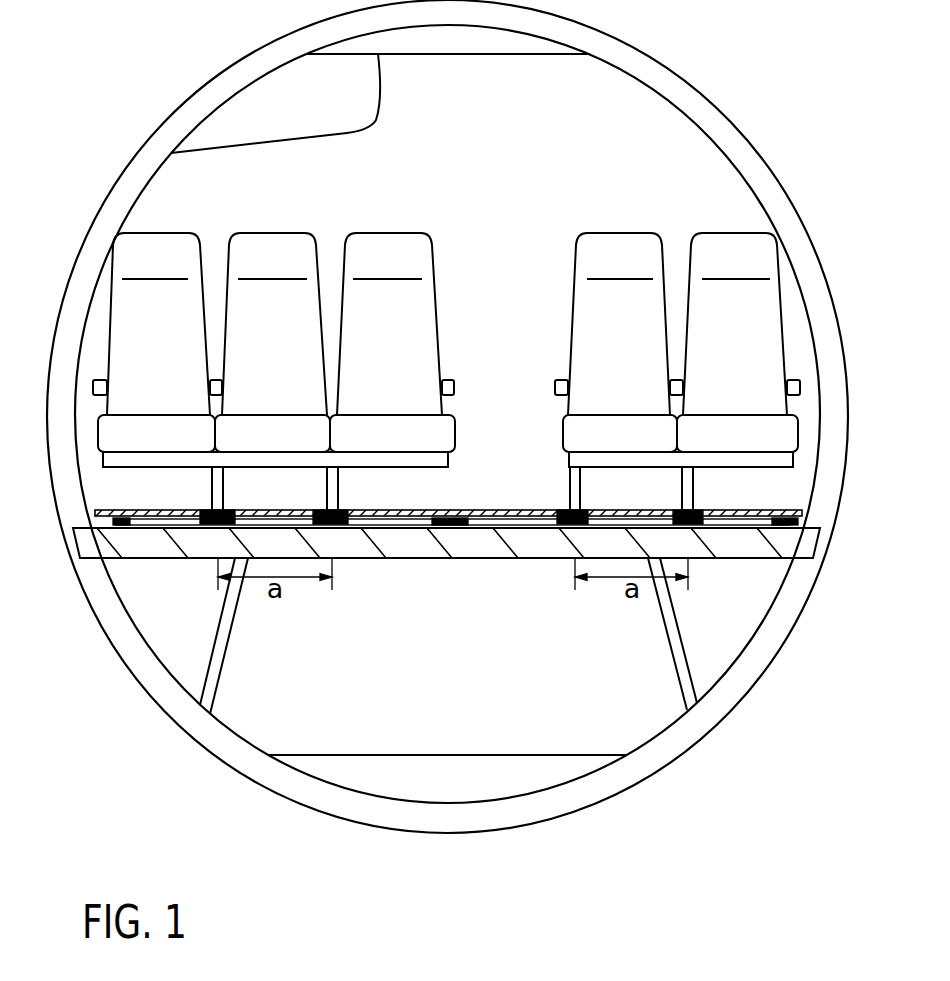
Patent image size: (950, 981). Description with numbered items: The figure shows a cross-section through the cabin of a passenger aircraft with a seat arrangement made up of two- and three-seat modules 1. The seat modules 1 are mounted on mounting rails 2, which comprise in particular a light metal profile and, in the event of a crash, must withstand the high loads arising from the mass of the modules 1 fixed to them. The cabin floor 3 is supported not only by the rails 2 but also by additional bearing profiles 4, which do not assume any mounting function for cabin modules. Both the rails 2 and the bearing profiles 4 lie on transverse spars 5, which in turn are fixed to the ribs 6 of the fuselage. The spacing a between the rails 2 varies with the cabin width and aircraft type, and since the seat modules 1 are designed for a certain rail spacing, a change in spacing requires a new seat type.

The seat module 1 is at (411, 212).
The mounting rail 2 is at (212, 522).
The cabin floor 3 is at (492, 510).
The bearing profile 4 is at (115, 523).
The transverse spar 5 is at (481, 543).
The rib 6 is at (203, 723).